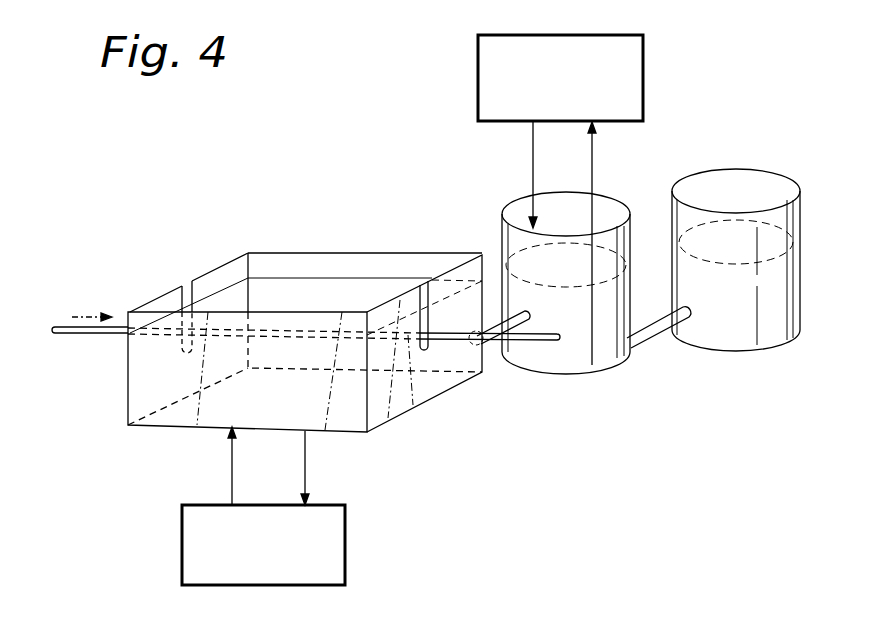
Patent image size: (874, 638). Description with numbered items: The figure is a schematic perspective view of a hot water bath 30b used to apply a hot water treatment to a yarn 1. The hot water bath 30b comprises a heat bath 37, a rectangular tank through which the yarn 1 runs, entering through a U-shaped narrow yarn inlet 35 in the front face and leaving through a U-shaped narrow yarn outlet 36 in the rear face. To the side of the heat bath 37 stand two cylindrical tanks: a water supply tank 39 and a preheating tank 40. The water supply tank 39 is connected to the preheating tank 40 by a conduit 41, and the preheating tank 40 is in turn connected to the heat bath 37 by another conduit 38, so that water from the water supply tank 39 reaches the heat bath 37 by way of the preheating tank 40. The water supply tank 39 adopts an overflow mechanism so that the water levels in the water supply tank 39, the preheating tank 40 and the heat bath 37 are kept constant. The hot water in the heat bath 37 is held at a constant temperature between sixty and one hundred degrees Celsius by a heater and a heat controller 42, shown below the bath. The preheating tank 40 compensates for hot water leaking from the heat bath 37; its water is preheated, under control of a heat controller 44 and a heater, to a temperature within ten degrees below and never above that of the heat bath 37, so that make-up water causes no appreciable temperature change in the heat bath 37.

The yarn 1 is at (67, 335).
The hot water bath 30b is at (454, 314).
The yarn inlet 35 is at (187, 282).
The yarn outlet 36 is at (422, 288).
The heat bath 37 is at (128, 386).
The conduit 38 is at (492, 326).
The water supply tank 39 is at (790, 275).
The preheating tank 40 is at (602, 362).
The conduit 41 is at (660, 327).
The heat controller 42 is at (347, 533).
The heat controller 44 is at (578, 35).